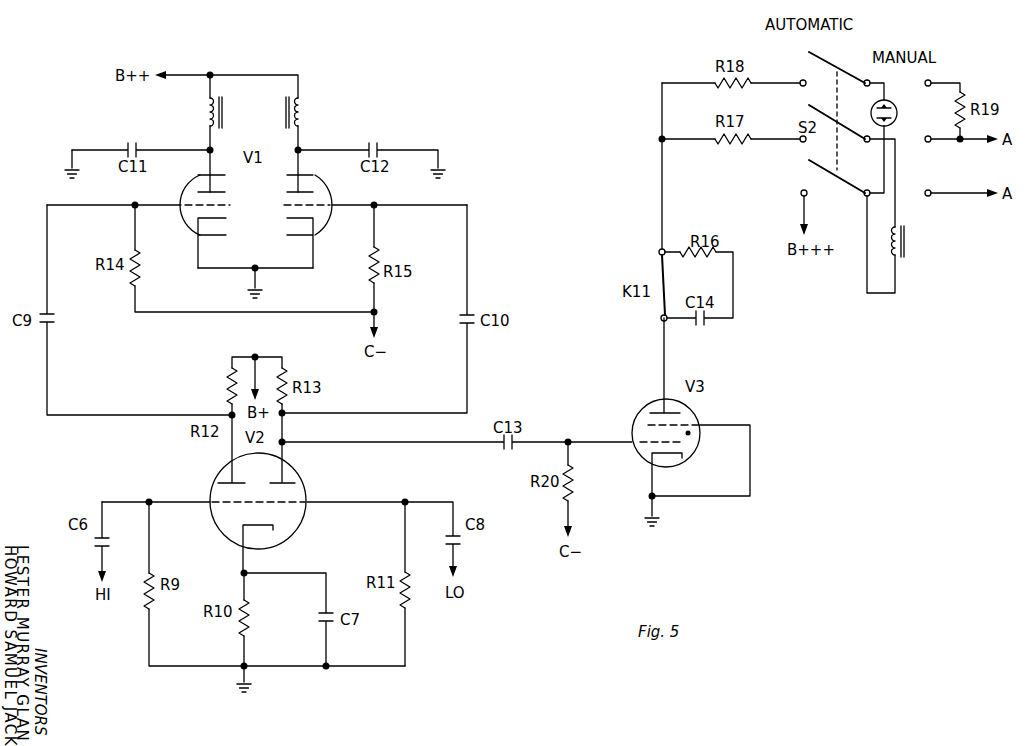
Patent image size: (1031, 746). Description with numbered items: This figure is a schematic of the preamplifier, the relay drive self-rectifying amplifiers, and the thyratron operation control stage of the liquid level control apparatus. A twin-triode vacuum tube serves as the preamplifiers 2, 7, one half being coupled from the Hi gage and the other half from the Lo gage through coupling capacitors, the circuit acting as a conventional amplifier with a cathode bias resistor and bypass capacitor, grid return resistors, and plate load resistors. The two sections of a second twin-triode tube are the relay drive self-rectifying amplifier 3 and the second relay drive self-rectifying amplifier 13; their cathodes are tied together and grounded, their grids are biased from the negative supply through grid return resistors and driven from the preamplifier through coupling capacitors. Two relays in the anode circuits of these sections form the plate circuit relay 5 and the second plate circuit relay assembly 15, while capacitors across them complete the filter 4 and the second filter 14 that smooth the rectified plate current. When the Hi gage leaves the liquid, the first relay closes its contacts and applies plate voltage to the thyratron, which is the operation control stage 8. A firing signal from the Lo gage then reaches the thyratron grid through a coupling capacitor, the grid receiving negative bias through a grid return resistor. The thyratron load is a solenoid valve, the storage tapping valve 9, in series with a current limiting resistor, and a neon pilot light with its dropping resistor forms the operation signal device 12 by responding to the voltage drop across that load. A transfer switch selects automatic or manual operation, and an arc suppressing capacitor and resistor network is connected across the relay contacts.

The preamplifier 2 is at (210, 473).
The relay drive self-rectifying amplifier 3 is at (208, 169).
The filter 4 is at (208, 148).
The plate circuit relay 5 is at (242, 115).
The preamplifier 7 is at (318, 473).
The operation control stage 8 is at (640, 405).
The storage tapping valve 9 is at (918, 290).
The operation signal device 12 is at (912, 96).
The second relay drive self-rectifying amplifier 13 is at (327, 169).
The second filter 14 is at (327, 148).
The second plate circuit relay assembly 15 is at (286, 115).